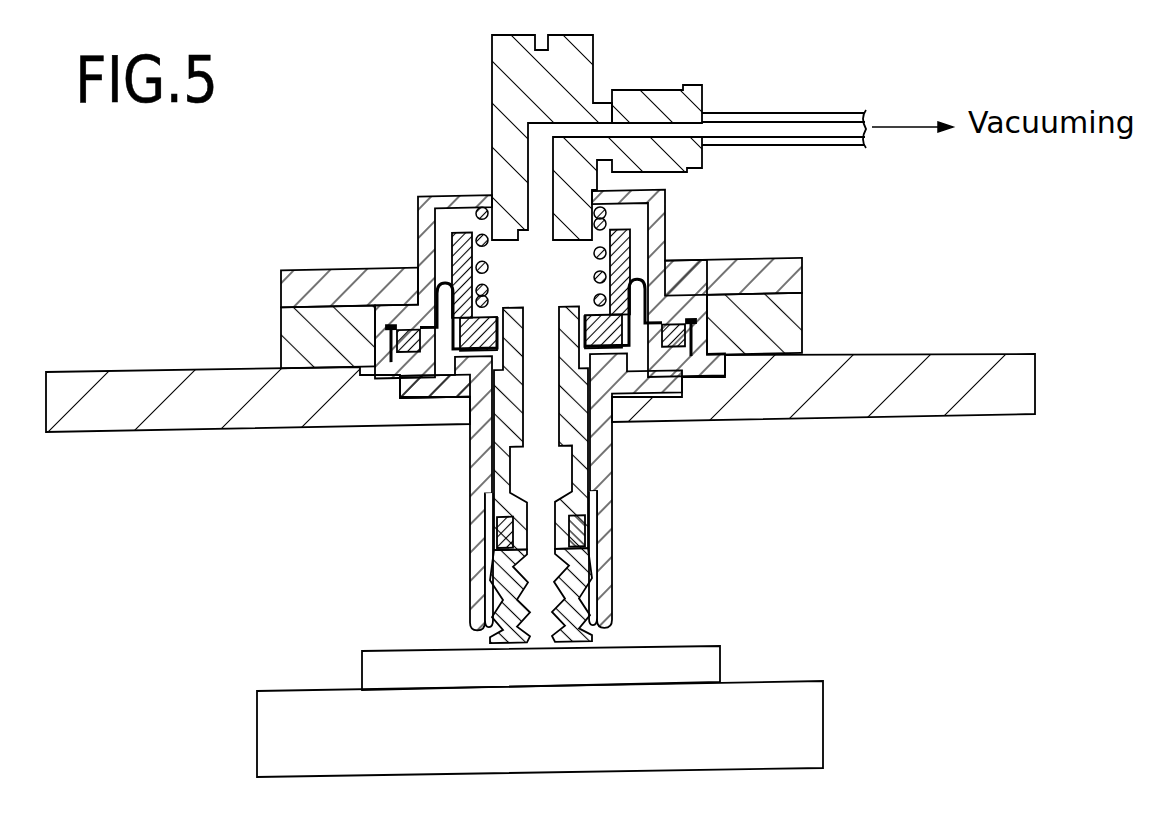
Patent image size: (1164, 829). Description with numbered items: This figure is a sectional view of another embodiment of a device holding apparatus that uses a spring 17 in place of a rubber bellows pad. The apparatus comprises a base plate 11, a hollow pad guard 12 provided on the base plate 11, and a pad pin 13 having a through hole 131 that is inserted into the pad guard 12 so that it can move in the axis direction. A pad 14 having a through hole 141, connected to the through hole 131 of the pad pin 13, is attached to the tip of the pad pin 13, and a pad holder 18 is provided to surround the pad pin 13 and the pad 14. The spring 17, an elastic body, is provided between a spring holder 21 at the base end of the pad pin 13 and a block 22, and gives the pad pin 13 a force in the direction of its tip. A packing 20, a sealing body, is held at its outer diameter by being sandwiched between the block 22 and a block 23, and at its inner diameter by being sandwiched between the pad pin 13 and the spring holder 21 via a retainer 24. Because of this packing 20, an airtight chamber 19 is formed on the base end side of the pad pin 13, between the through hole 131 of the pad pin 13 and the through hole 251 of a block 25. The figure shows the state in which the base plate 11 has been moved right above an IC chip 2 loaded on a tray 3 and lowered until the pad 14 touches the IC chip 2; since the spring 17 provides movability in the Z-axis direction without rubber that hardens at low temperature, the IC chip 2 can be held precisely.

The IC chip 2 is at (690, 645).
The tray 3 is at (812, 730).
The base plate 11 is at (905, 365).
The pad guard 12 is at (605, 458).
The pad pin 13 is at (610, 510).
The through hole 131 is at (493, 478).
The pad 14 is at (577, 623).
The through hole 141 is at (485, 607).
The spring 17 is at (478, 210).
The pad holder 18 is at (490, 545).
The airtight chamber 19 is at (563, 288).
The packing 20 is at (440, 282).
The spring holder 21 is at (458, 235).
The block 22 is at (300, 272).
The block 23 is at (283, 344).
The retainer 24 is at (418, 228).
The block 25 is at (496, 84).
The through hole 251 is at (662, 118).